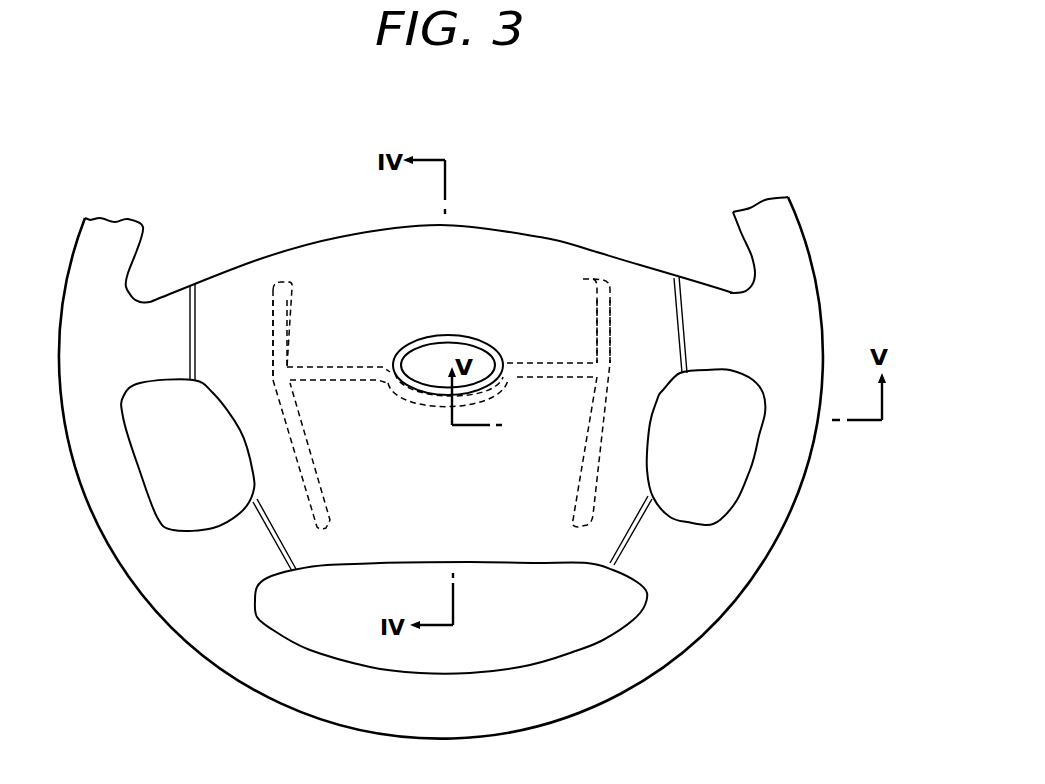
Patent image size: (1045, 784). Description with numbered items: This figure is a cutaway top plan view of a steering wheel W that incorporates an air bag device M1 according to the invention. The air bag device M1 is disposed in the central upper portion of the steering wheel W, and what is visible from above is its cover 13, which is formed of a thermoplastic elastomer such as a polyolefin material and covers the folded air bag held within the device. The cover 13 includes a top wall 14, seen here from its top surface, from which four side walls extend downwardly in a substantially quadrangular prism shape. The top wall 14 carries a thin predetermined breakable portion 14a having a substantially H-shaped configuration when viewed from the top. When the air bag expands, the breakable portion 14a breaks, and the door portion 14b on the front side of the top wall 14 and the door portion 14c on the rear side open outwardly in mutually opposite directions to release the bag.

The cover 13 is at (255, 258).
The top wall 14 is at (537, 263).
The predetermined breakable portion 14a is at (366, 366).
The door portion 14b is at (331, 297).
The door portion 14c is at (527, 467).
The air bag device M1 is at (621, 237).
The steering wheel W is at (805, 583).